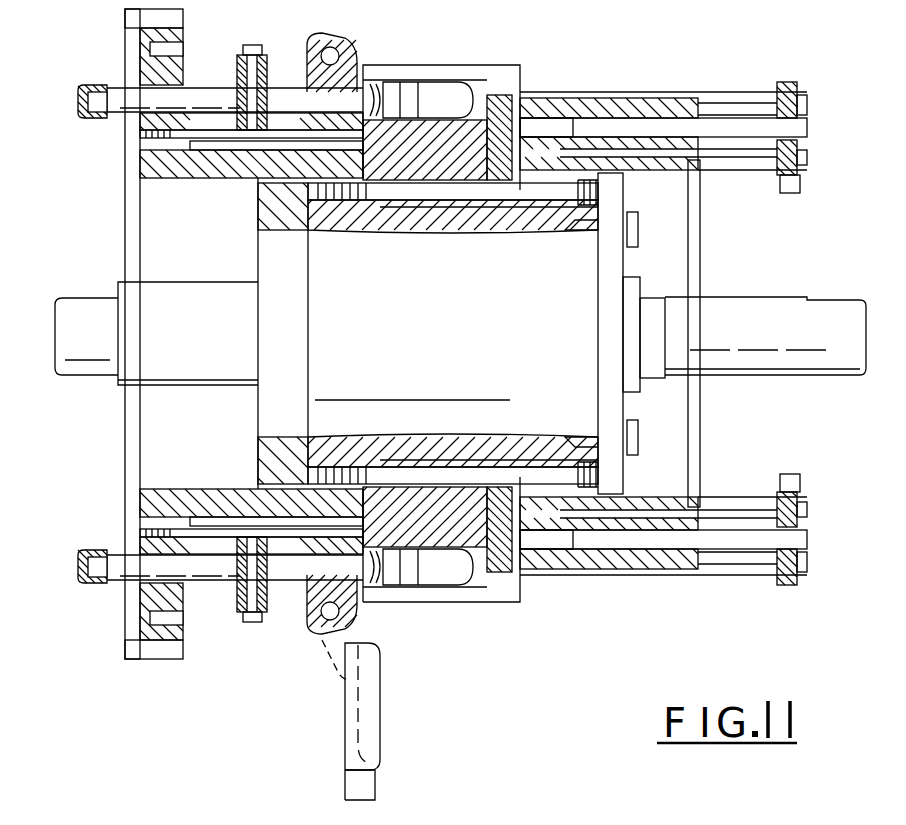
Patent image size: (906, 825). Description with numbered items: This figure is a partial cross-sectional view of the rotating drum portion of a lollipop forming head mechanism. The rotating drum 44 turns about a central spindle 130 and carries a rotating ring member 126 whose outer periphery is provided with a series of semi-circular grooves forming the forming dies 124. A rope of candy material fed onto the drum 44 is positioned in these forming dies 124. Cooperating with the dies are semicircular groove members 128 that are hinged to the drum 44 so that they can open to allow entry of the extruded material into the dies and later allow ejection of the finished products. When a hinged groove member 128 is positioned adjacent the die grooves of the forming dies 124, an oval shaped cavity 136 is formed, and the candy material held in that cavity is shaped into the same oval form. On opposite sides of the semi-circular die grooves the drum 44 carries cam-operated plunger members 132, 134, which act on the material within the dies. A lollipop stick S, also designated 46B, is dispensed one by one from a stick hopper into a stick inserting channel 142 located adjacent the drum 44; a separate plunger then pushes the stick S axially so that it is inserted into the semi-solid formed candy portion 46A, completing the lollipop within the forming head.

The forming dies 124 is at (438, 115).
The rotating ring member 126 is at (438, 527).
The semicircular groove members 128 is at (352, 750).
The central spindle 130 is at (752, 310).
The cam-operated plunger member 132 is at (227, 568).
The cam-operated plunger member 134 is at (647, 540).
The oval shaped cavity 136 is at (405, 118).
The stick inserting channel 142 is at (735, 95).
The rotating drum 44 is at (487, 110).
The semi-solid formed candy portion 46A is at (442, 86).
The lollipop stick 46B is at (645, 100).
The lollipop stick S is at (602, 95).